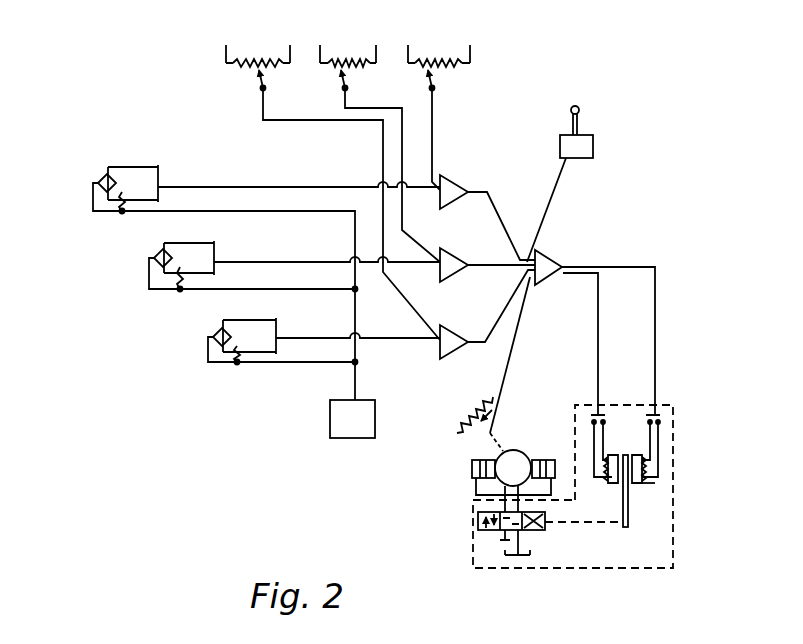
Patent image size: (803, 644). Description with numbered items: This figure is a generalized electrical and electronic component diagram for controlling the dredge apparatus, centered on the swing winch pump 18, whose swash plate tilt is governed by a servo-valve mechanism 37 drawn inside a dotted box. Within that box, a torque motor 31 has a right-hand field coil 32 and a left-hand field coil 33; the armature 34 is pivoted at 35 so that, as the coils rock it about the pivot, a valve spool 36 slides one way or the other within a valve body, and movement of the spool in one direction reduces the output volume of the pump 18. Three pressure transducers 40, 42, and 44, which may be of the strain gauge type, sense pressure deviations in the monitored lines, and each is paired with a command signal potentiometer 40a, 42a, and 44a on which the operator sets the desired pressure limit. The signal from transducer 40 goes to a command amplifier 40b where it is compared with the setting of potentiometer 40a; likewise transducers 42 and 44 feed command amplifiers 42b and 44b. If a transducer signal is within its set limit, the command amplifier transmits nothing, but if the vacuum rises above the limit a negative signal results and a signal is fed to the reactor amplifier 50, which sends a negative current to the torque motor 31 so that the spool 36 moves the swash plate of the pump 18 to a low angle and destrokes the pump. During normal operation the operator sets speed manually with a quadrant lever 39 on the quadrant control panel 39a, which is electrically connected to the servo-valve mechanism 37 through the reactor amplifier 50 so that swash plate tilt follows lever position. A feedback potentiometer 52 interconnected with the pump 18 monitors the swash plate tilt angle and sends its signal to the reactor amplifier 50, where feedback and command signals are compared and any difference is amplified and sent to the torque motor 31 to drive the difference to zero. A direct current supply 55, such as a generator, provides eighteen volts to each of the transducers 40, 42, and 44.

The swing winch pump 18 is at (524, 452).
The torque motor 31 is at (660, 466).
The right-hand field coil 32 is at (648, 485).
The left-hand field coil 33 is at (612, 484).
The armature 34 is at (630, 518).
The pivot 35 is at (638, 458).
The valve spool 36 is at (530, 530).
The servo-valve mechanism 37 is at (598, 572).
The quadrant lever 39 is at (580, 111).
The quadrant control panel 39a is at (591, 160).
The pressure transducer 40 is at (95, 175).
The command signal potentiometer 40a is at (452, 42).
The command amplifier 40b is at (460, 184).
The pressure transducer 42 is at (148, 255).
The command signal potentiometer 42a is at (365, 42).
The command amplifier 42b is at (452, 264).
The pressure transducer 44 is at (213, 330).
The command signal potentiometer 44a is at (280, 44).
The command amplifier 44b is at (452, 338).
The reactor amplifier 50 is at (548, 263).
The feedback potentiometer 52 is at (468, 417).
The direct current supply 55 is at (366, 432).